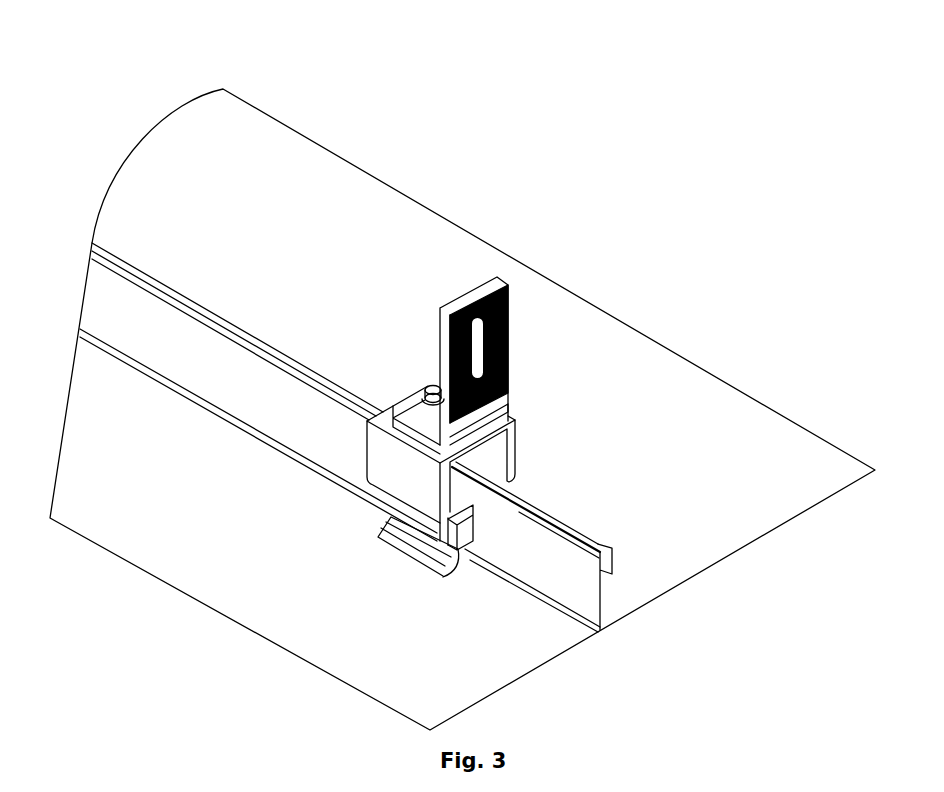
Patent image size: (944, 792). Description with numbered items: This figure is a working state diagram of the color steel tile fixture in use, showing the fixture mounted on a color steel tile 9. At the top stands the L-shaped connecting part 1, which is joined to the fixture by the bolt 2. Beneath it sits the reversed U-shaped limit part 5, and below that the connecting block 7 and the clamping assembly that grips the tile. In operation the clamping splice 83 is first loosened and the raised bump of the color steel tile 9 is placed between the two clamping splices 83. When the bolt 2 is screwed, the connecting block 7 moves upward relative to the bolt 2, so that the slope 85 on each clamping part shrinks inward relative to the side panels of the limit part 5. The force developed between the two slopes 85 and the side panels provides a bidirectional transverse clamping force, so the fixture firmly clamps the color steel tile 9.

The L-shaped connecting part 1 is at (510, 345).
The bolt 2 is at (437, 385).
The reversed U-shaped limit part 5 is at (513, 452).
The connecting block 7 is at (473, 480).
The clamping splice 83 is at (460, 485).
The slope 85 is at (393, 515).
The color steel tile 9 is at (598, 624).